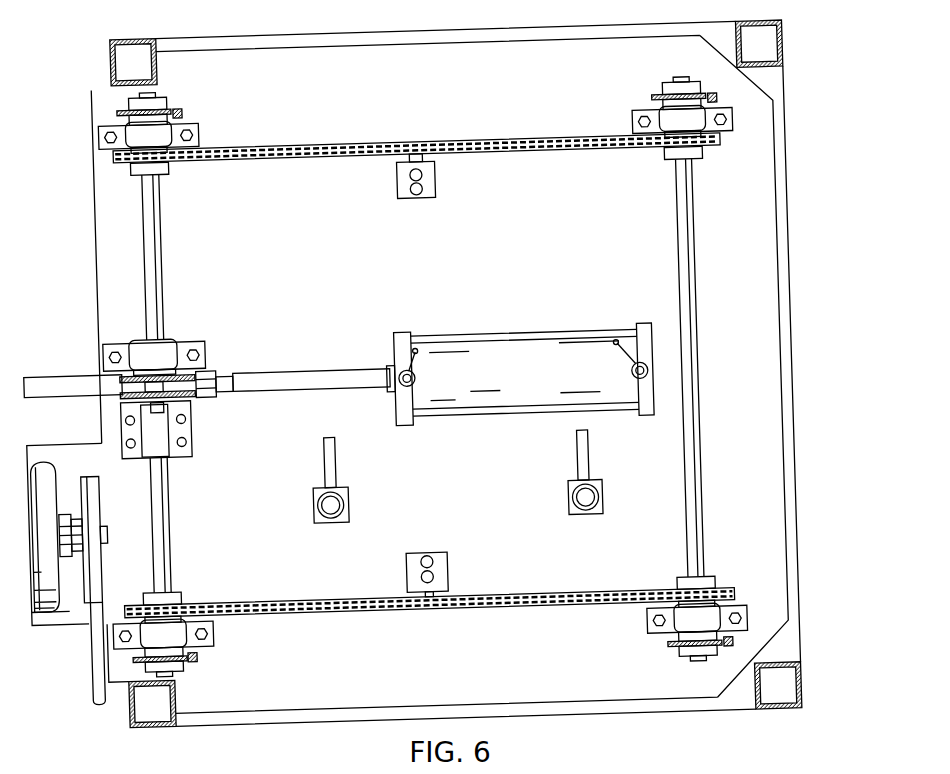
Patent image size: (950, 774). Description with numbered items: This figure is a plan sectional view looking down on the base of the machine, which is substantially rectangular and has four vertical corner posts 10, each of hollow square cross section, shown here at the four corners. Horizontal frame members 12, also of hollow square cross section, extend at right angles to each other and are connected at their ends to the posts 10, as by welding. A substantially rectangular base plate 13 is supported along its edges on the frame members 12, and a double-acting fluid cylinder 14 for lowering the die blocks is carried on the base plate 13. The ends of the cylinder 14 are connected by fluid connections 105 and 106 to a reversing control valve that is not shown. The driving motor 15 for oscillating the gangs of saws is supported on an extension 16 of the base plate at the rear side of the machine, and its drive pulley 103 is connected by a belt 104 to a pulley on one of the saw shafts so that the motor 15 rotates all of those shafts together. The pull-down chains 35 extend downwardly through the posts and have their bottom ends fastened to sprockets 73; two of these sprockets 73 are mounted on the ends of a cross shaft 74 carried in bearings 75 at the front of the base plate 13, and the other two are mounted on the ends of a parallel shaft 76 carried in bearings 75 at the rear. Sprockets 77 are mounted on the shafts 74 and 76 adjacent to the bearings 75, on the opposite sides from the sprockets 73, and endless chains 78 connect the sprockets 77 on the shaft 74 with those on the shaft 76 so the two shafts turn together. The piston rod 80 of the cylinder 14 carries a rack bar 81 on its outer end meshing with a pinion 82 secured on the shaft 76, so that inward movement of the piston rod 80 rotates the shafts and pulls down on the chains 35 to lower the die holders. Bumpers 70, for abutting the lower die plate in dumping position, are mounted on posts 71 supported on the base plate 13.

The vertical corner post 10 is at (120, 31).
The horizontal frame member 12 is at (270, 31).
The base plate 13 is at (100, 212).
The double-acting fluid cylinder 14 is at (517, 335).
The driving motor 15 is at (46, 460).
The extension of the base plate 16 is at (60, 615).
The pull-down chain 35 is at (190, 103).
The bumper 70 is at (330, 502).
The post 71 is at (344, 516).
The sprocket 73 is at (158, 101).
The cross shaft 74 is at (698, 451).
The bearing 75 is at (178, 120).
The parallel shaft 76 is at (165, 484).
The sprocket 77 is at (170, 160).
The endless chain 78 is at (522, 153).
The piston rod 80 is at (300, 367).
The rack bar 81 is at (60, 370).
The pinion 82 is at (192, 367).
The drive pulley 103 is at (96, 480).
The belt 104 is at (84, 686).
The fluid connection 105 is at (414, 364).
The fluid connection 106 is at (632, 376).